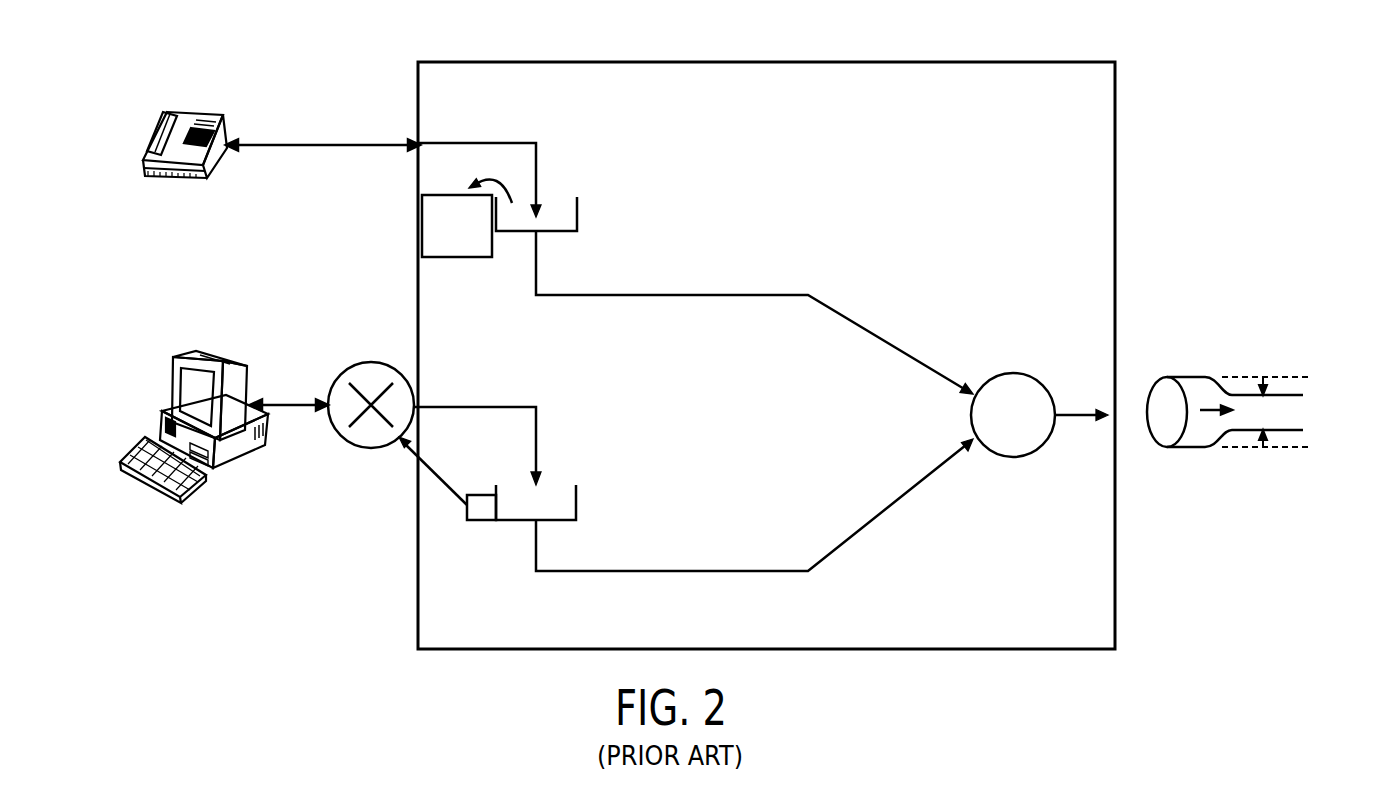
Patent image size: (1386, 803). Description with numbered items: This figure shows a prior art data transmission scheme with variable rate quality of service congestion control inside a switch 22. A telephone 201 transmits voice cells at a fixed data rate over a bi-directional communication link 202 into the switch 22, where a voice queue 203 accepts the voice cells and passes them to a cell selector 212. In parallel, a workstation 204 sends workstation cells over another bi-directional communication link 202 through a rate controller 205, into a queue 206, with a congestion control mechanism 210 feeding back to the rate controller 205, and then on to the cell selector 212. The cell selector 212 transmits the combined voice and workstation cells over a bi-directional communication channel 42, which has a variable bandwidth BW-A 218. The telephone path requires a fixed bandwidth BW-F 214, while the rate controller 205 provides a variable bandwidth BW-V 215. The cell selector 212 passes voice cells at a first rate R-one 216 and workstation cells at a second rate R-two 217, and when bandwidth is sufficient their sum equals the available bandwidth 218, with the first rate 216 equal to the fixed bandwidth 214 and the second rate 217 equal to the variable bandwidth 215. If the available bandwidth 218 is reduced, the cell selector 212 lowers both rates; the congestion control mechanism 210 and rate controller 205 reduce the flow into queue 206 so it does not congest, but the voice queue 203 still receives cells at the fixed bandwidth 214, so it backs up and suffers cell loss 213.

The switch 22 is at (905, 62).
The telephone 201 is at (162, 180).
The bi-directional communication link 202 is at (318, 138).
The voice queue 203 is at (578, 213).
The workstation 204 is at (160, 495).
The rate controller 205 is at (355, 360).
The queue 206 is at (578, 503).
The congestion control mechanism 210 is at (482, 527).
The cell selector 212 is at (1043, 382).
The cell loss 213 is at (472, 258).
The fixed bandwidth BW_F 214 is at (493, 113).
The variable bandwidth BW_V 215 is at (505, 375).
The voice cell rate R_1 216 is at (923, 322).
The workstation cell rate R_2 217 is at (935, 525).
The variable bandwidth BW_A 218 is at (1347, 437).
The bi-directional communication channel 42 is at (1202, 367).